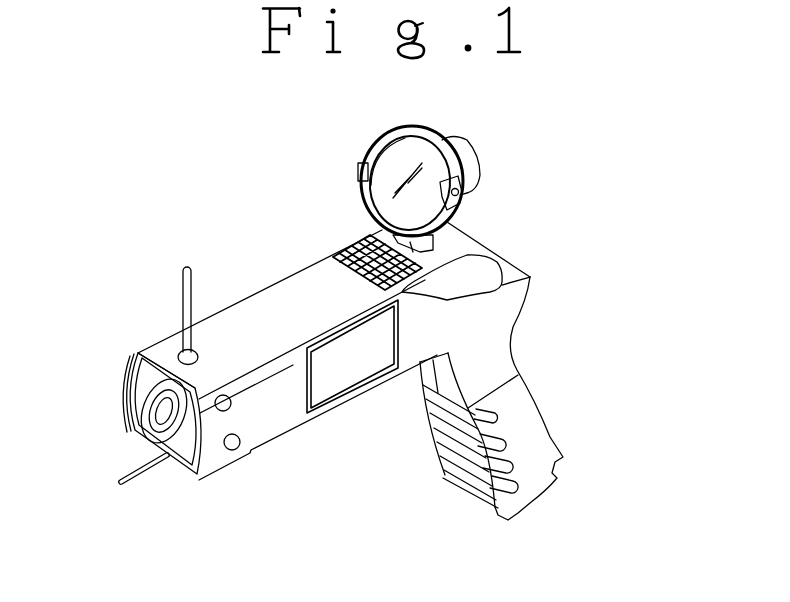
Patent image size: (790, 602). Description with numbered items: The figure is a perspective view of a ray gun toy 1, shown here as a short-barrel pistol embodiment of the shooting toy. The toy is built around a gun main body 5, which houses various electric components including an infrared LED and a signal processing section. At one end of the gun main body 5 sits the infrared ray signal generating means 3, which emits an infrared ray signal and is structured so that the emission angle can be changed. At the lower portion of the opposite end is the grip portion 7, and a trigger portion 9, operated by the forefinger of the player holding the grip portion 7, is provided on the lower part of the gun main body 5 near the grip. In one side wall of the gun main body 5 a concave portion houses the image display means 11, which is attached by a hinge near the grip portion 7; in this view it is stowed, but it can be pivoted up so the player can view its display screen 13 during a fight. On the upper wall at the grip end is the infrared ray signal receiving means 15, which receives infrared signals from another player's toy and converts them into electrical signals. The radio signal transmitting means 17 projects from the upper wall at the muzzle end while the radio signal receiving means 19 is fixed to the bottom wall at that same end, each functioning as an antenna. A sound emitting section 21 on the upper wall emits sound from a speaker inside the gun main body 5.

The ray gun toy 1 is at (278, 198).
The infrared ray signal generating means 3 is at (159, 411).
The gun main body 5 is at (287, 294).
The grip portion 7 is at (463, 463).
The trigger portion 9 is at (423, 363).
The image display means 11 is at (322, 413).
The display screen 13 is at (345, 383).
The infrared ray signal receiving means 15 is at (403, 152).
The radio signal transmitting means 17 is at (181, 288).
The radio signal receiving means 19 is at (153, 474).
The sound emitting section 21 is at (353, 237).